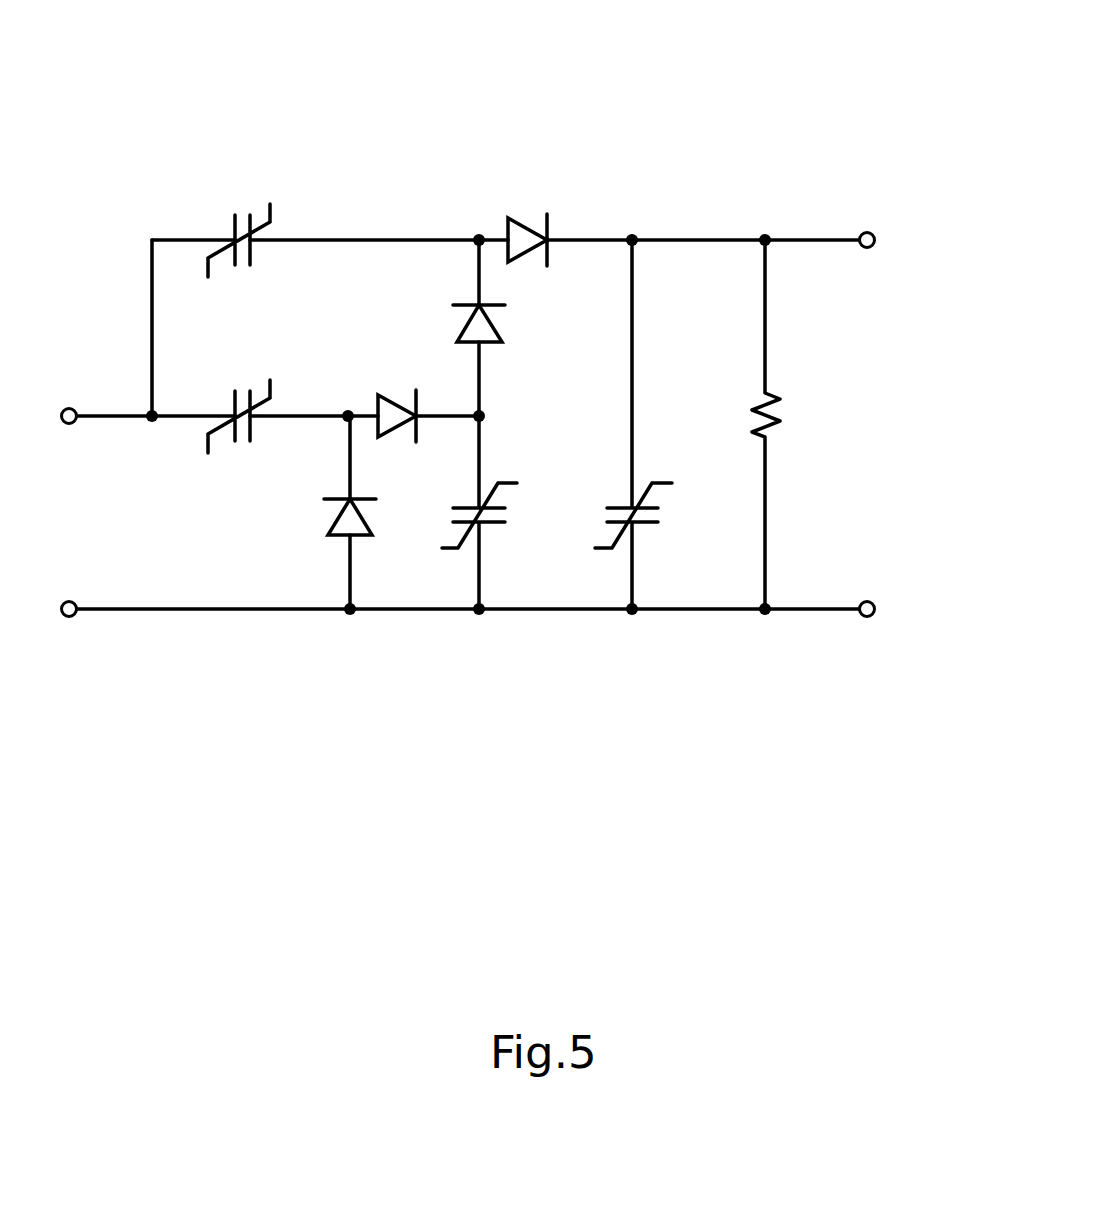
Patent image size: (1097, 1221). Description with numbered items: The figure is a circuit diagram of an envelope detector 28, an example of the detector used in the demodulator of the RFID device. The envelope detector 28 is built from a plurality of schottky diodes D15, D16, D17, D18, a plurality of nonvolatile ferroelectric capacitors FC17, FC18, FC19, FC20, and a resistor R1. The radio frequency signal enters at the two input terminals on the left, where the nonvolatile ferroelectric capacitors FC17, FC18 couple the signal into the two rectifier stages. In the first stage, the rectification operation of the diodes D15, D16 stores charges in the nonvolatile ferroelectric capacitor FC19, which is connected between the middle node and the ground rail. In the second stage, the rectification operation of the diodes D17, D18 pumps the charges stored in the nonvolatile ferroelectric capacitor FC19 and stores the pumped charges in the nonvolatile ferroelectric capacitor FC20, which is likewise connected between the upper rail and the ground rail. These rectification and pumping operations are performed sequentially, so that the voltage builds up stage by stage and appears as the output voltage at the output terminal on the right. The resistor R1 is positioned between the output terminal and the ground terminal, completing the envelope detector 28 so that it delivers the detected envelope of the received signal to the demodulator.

The envelope detector 28 is at (848, 108).
The nonvolatile ferroelectric capacitor FC17 is at (246, 222).
The nonvolatile ferroelectric capacitor FC18 is at (247, 438).
The nonvolatile ferroelectric capacitor FC19 is at (504, 512).
The nonvolatile ferroelectric capacitor FC20 is at (656, 424).
The schottky diode D15 is at (322, 512).
The schottky diode D16 is at (398, 439).
The schottky diode D17 is at (449, 328).
The schottky diode D18 is at (532, 217).
The resistor R1 is at (787, 424).